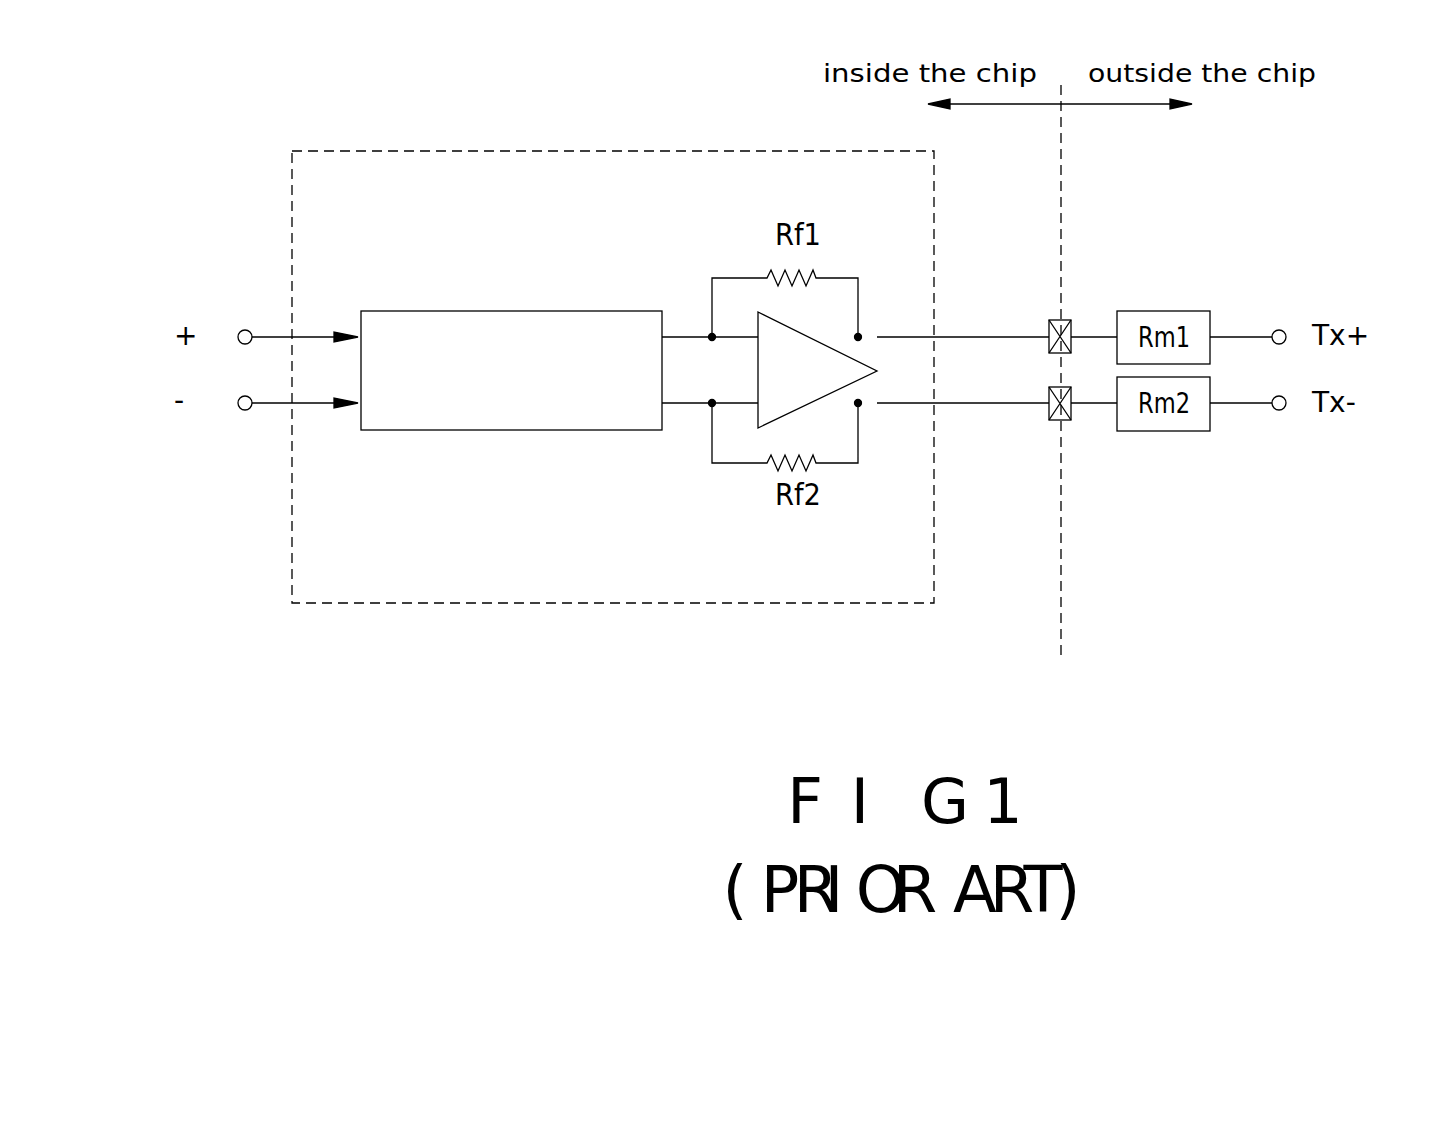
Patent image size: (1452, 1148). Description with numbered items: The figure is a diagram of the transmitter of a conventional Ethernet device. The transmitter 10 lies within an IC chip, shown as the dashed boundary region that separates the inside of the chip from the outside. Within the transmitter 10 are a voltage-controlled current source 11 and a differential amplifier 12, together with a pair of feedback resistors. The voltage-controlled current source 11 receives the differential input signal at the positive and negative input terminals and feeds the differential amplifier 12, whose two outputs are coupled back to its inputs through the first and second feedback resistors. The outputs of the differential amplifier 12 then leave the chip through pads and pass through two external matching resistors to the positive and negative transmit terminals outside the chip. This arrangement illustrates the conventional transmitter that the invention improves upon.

The transmitter 10 is at (793, 604).
The voltage-controlled current source 11 is at (580, 430).
The differential amplifier 12 is at (860, 358).